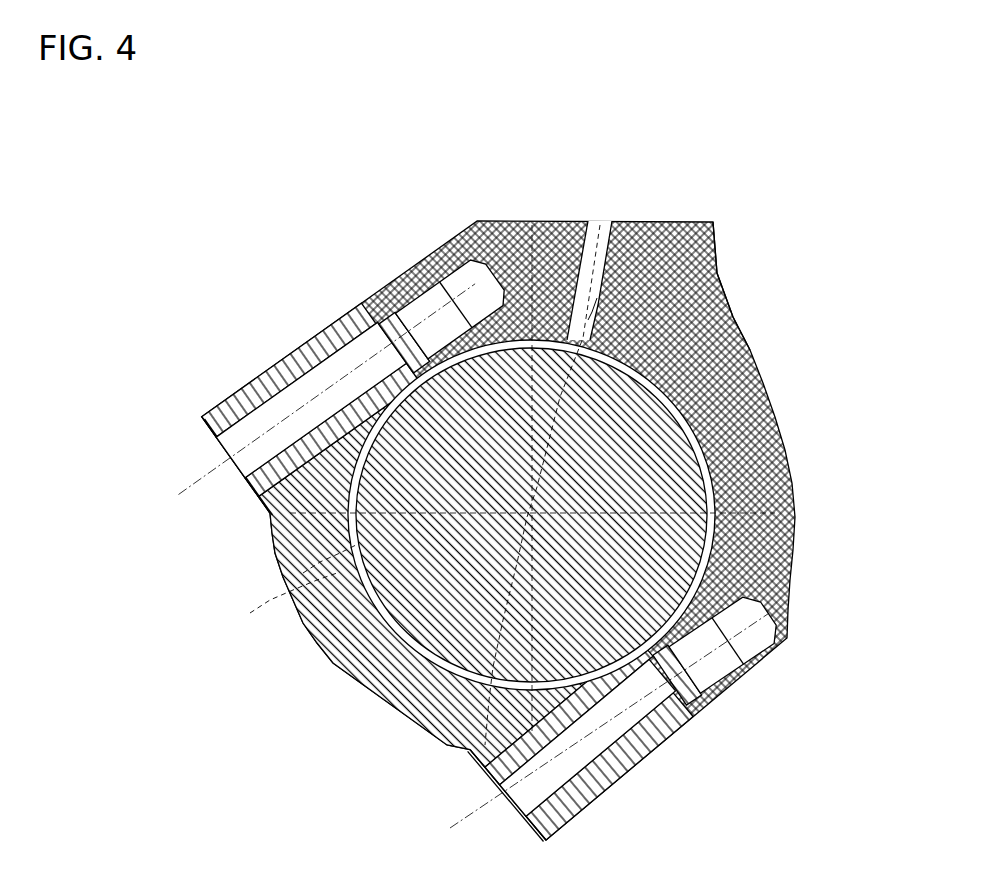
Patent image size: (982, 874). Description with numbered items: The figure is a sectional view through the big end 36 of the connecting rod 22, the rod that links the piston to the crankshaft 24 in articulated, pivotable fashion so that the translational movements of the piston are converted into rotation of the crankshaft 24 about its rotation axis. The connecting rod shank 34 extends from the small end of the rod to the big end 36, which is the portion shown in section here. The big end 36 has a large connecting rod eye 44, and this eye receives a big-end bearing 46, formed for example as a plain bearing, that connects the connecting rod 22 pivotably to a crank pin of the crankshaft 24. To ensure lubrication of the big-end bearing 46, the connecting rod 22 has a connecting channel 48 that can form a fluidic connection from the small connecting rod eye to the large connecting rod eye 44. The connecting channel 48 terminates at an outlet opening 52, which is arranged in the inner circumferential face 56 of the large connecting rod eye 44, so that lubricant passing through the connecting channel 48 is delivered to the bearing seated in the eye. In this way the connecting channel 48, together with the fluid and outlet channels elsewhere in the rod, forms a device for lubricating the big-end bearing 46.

The connecting rod 22 is at (238, 234).
The crankshaft 24 is at (400, 592).
The connecting rod shank 34 is at (715, 226).
The big end 36 is at (238, 334).
The large connecting rod eye 44 is at (318, 486).
The big-end bearing 46 is at (330, 560).
The connecting channel 48 is at (578, 262).
The outlet opening 52 is at (710, 274).
The inner circumferential face 56 is at (372, 708).